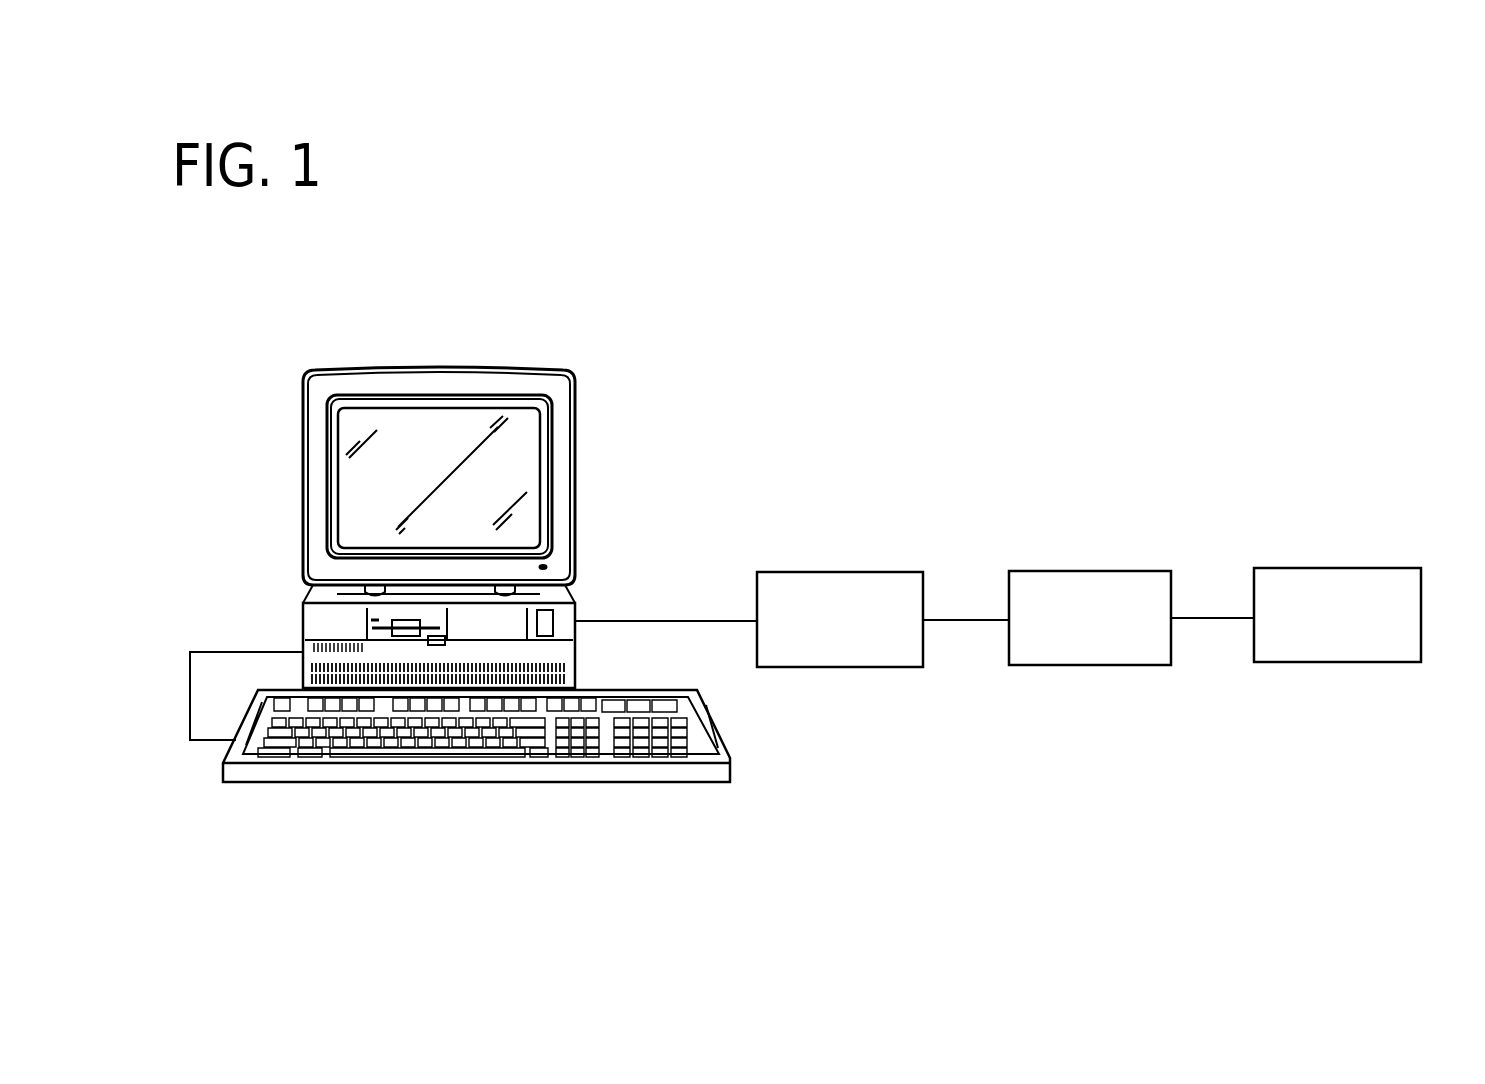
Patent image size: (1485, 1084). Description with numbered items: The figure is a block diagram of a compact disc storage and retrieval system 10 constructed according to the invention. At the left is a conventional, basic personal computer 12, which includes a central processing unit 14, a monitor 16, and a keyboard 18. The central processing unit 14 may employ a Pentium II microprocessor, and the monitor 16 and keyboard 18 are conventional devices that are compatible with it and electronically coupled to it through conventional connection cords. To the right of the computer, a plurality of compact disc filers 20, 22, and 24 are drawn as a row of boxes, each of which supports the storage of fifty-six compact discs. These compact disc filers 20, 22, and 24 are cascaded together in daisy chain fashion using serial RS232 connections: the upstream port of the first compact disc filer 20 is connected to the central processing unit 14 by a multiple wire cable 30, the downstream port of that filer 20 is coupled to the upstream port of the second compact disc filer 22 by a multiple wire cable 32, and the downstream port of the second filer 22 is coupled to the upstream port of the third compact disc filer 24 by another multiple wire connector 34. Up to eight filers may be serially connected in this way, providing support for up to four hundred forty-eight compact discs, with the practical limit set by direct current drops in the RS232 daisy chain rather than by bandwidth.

The compact disc storage and retrieval system 10 is at (812, 443).
The personal computer 12 is at (613, 549).
The central processing unit 14 is at (562, 644).
The monitor 16 is at (560, 428).
The keyboard 18 is at (710, 735).
The compact disc filer 20 is at (850, 556).
The compact disc filer 22 is at (1075, 556).
The compact disc filer 24 is at (1347, 551).
The multiple wire cable 30 is at (652, 621).
The multiple wire cable 32 is at (963, 621).
The multiple wire connector 34 is at (1212, 618).